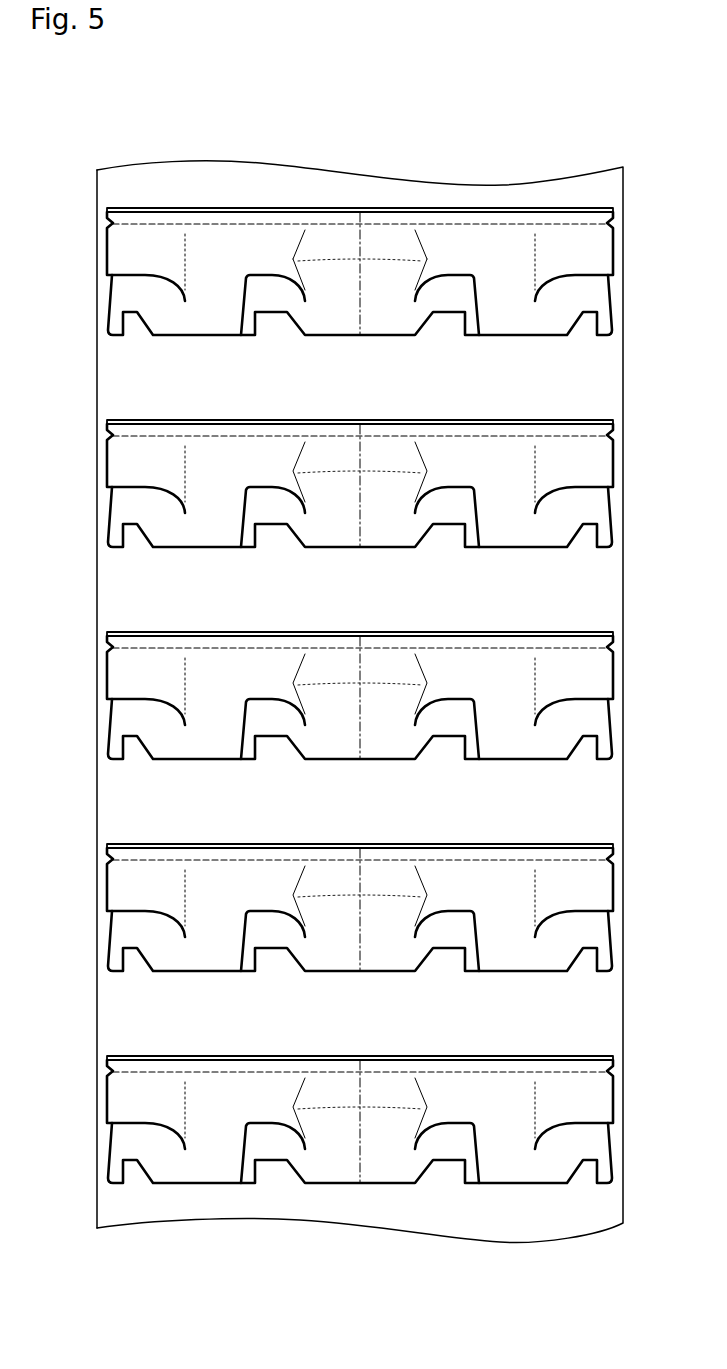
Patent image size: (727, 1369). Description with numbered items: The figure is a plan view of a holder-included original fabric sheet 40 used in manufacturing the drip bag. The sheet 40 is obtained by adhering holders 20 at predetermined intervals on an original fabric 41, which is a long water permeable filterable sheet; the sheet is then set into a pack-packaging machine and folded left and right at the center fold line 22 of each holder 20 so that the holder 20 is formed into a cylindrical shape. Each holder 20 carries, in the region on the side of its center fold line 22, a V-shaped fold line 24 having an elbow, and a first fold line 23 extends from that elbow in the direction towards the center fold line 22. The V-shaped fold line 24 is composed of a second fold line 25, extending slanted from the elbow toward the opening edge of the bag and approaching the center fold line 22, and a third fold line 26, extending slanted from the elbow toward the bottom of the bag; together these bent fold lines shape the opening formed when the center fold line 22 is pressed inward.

The holder 20 is at (320, 212).
The center fold line 22 is at (347, 229).
The first fold line 23 is at (360, 193).
The V-shaped fold line 24 is at (310, 190).
The second fold line 25 is at (336, 191).
The third fold line 26 is at (315, 208).
The holder-included original fabric sheet 40 is at (390, 1285).
The original fabric 41 is at (127, 379).